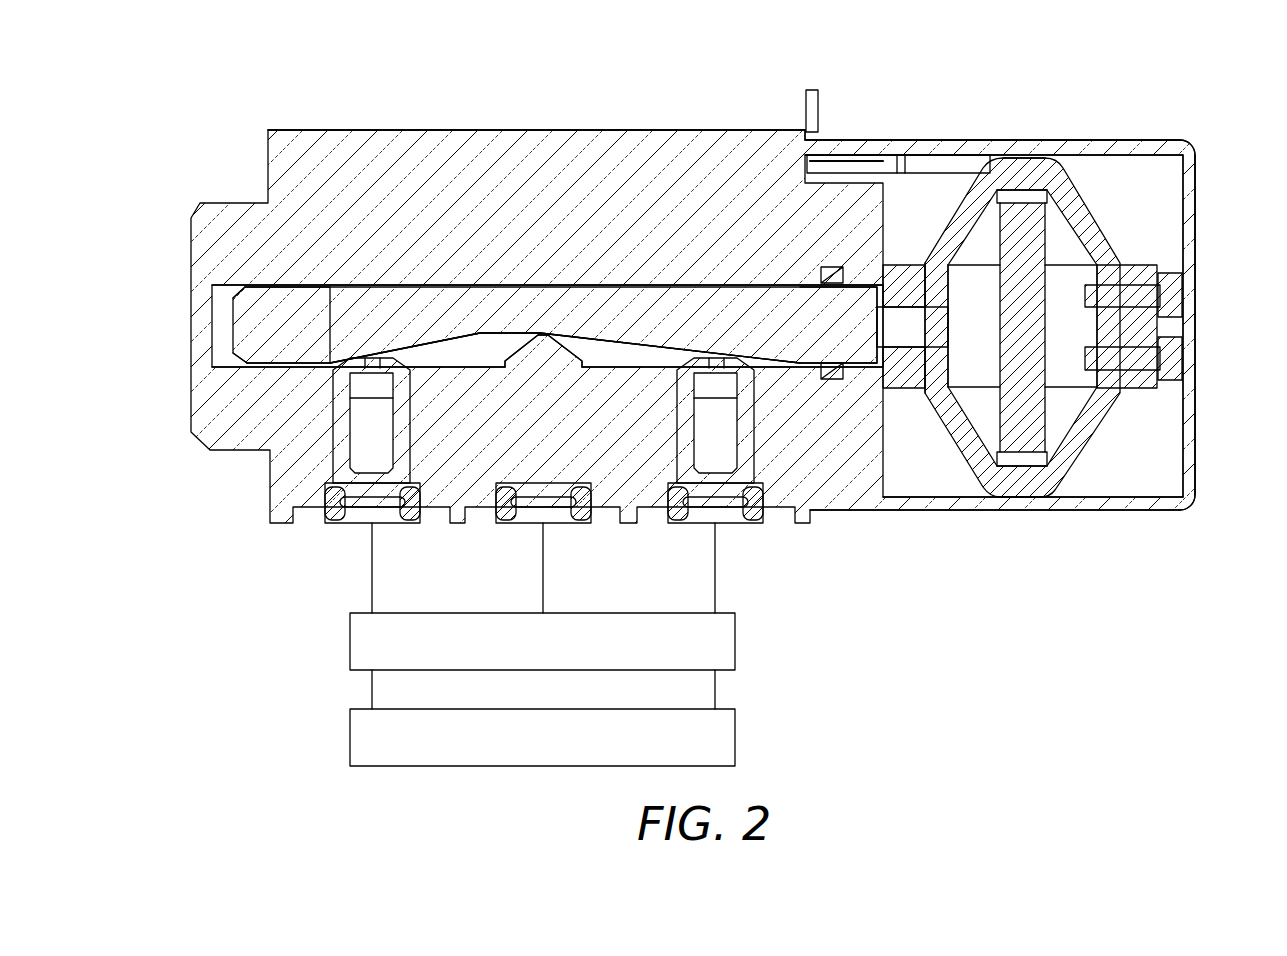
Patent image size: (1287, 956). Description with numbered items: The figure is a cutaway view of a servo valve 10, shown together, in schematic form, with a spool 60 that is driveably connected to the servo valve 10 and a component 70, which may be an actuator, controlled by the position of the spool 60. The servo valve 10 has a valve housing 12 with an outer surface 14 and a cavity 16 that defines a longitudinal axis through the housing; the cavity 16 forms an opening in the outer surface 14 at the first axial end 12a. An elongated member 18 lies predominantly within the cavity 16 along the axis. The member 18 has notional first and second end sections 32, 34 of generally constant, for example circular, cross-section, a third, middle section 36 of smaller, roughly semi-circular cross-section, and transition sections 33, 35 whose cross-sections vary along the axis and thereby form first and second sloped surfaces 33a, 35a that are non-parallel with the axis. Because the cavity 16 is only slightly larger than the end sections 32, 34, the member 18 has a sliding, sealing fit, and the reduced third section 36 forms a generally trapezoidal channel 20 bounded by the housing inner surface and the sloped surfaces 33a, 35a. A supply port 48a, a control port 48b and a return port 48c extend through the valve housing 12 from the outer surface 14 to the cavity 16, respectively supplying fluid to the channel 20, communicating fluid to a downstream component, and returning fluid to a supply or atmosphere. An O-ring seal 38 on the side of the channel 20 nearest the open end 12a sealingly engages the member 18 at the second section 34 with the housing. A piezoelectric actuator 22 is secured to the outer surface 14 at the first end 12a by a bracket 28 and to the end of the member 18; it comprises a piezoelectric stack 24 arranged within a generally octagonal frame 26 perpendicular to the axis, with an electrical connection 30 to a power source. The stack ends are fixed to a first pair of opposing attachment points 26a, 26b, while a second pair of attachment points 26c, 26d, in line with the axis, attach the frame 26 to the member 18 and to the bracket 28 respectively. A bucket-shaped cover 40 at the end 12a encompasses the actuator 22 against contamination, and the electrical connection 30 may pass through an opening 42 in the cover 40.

The servo valve 10 is at (1162, 86).
The valve housing 12 is at (495, 148).
The first axial end 12a is at (893, 482).
The outer surface 14 is at (293, 128).
The cavity 16 is at (620, 333).
The elongated member 18 is at (868, 352).
The channel 20 is at (490, 322).
The piezoelectric actuator 22 is at (1203, 514).
The piezoelectric stack 24 is at (1036, 228).
The frame 26 is at (1097, 240).
The first attachment point 26a is at (1030, 170).
The second attachment point 26b is at (1020, 488).
The third attachment point 26c is at (922, 312).
The fourth attachment point 26d is at (1120, 322).
The bracket 28 is at (965, 372).
The electrical connection 30 is at (945, 158).
The first end section 32 is at (238, 325).
The first transition section 33 is at (330, 322).
The first sloped surface 33a is at (440, 352).
The second end section 34 is at (810, 352).
The second transition section 35 is at (757, 320).
The second sloped surface 35a is at (650, 345).
The third section 36 is at (558, 320).
The O-ring seal 38 is at (832, 266).
The cover 40 is at (1198, 168).
The opening 42 is at (819, 130).
The supply port 48a is at (372, 508).
The control port 48b is at (543, 508).
The return port 48c is at (715, 508).
The spool 60 is at (738, 625).
The component 70 is at (738, 719).